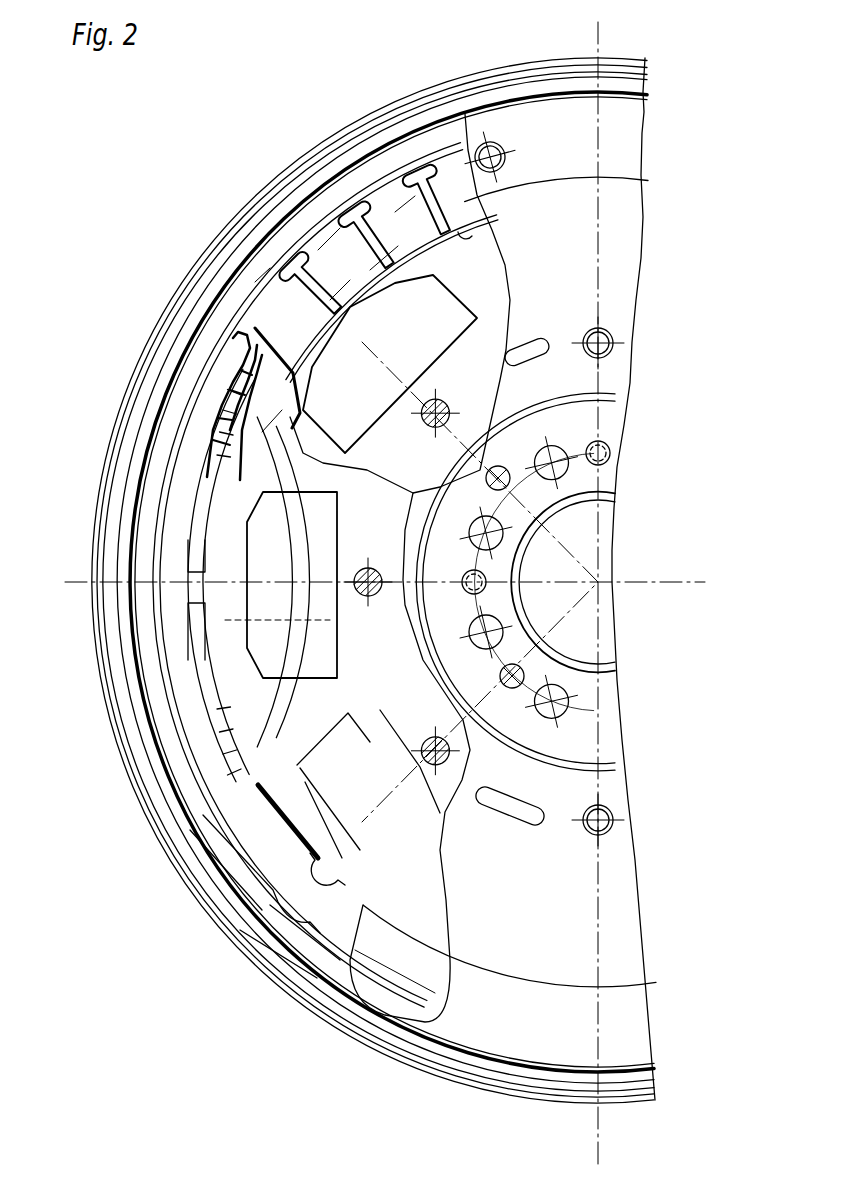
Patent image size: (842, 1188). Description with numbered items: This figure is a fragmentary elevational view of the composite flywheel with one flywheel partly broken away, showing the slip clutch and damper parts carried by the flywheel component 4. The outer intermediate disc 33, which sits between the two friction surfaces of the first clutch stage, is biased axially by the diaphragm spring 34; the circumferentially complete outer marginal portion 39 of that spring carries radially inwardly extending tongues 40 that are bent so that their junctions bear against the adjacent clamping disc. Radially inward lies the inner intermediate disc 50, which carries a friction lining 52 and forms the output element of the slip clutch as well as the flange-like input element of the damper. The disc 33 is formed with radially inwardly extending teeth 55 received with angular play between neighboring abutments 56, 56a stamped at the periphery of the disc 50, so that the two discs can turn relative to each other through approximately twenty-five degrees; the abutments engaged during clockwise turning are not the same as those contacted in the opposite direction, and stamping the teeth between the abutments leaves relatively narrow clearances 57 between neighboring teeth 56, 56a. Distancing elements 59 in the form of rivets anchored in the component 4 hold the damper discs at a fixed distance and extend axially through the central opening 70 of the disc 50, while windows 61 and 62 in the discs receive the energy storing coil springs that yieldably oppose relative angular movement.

The component 4 is at (618, 137).
The intermediate disc 33 is at (188, 497).
The diaphragm spring 34 is at (385, 190).
The outer marginal portion 39 is at (436, 155).
The tongues 40 is at (450, 192).
The intermediate disc 50 is at (283, 265).
The friction lining 52 is at (223, 667).
The teeth 55 is at (198, 592).
The abutments 56 is at (217, 707).
The abutments 56a is at (212, 452).
The clearances 57 is at (226, 427).
The distancing elements 59 is at (440, 762).
The window 61 is at (398, 340).
The window 62 is at (205, 792).
The central opening 70 is at (376, 655).